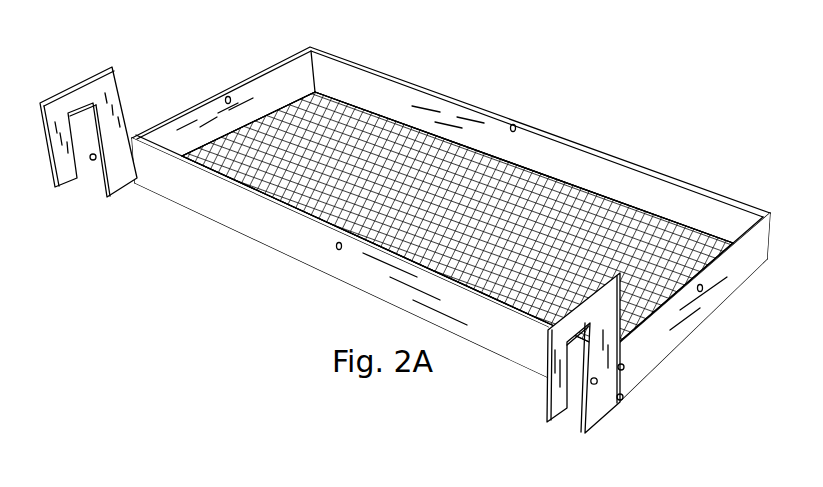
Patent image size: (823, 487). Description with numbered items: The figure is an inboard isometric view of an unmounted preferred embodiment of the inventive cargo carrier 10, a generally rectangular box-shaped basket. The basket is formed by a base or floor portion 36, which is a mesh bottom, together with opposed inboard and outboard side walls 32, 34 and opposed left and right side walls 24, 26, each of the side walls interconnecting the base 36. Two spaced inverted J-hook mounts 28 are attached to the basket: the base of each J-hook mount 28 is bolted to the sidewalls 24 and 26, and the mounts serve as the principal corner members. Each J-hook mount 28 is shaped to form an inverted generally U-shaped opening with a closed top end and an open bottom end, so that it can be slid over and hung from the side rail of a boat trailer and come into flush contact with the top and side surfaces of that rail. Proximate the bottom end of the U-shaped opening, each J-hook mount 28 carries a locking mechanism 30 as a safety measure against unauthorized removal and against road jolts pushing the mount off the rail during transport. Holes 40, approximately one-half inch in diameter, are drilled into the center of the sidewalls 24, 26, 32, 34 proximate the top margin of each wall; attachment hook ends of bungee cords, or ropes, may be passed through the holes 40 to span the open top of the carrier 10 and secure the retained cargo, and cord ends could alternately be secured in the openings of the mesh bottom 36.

The cargo carrier 10 is at (653, 100).
The left side wall 24 is at (662, 349).
The right side wall 26 is at (267, 78).
The inverted J-hook mount 28 is at (56, 176).
The locking mechanism 30 is at (92, 161).
The inboard side wall 32 is at (173, 193).
The outboard side wall 34 is at (702, 196).
The base or floor portion 36 is at (386, 132).
The holes 40 is at (228, 96).